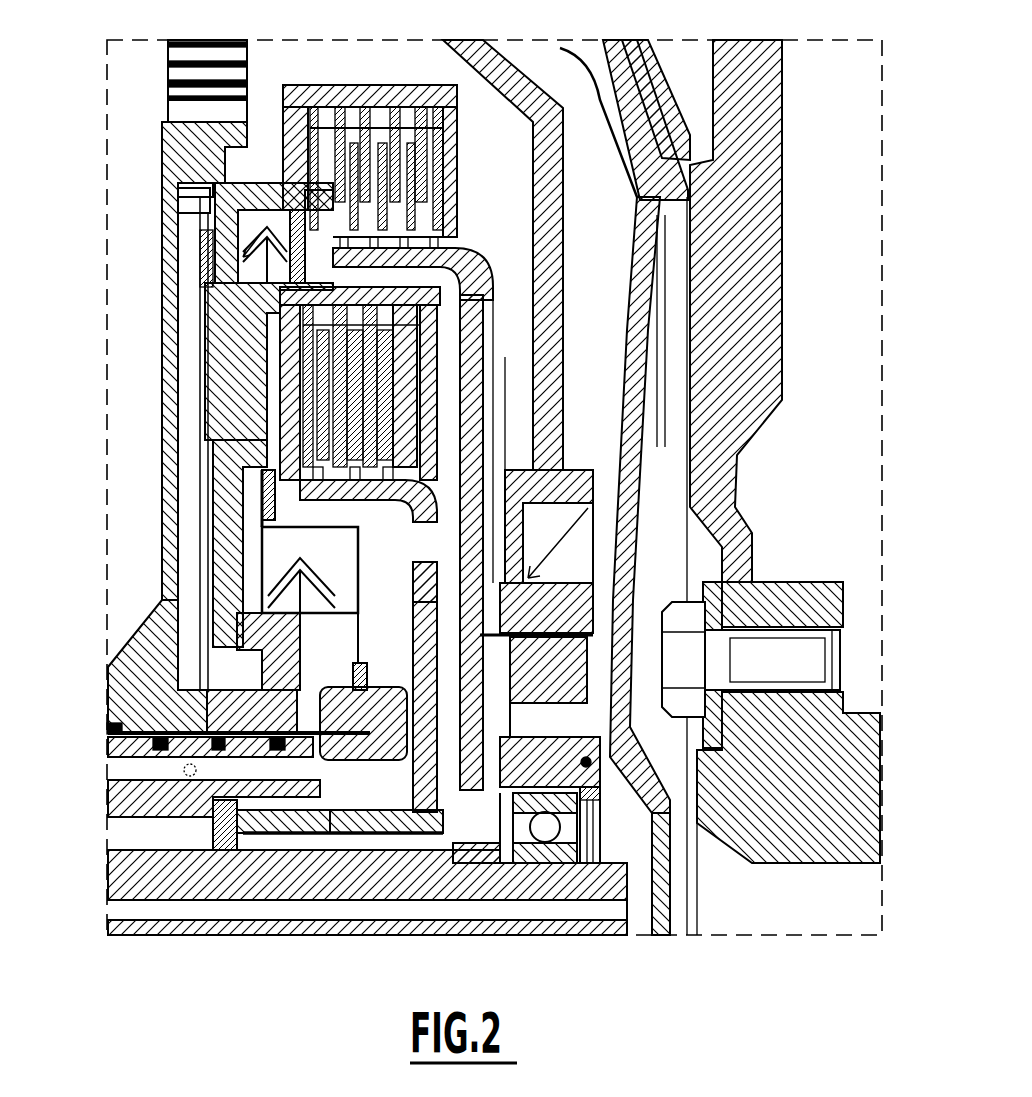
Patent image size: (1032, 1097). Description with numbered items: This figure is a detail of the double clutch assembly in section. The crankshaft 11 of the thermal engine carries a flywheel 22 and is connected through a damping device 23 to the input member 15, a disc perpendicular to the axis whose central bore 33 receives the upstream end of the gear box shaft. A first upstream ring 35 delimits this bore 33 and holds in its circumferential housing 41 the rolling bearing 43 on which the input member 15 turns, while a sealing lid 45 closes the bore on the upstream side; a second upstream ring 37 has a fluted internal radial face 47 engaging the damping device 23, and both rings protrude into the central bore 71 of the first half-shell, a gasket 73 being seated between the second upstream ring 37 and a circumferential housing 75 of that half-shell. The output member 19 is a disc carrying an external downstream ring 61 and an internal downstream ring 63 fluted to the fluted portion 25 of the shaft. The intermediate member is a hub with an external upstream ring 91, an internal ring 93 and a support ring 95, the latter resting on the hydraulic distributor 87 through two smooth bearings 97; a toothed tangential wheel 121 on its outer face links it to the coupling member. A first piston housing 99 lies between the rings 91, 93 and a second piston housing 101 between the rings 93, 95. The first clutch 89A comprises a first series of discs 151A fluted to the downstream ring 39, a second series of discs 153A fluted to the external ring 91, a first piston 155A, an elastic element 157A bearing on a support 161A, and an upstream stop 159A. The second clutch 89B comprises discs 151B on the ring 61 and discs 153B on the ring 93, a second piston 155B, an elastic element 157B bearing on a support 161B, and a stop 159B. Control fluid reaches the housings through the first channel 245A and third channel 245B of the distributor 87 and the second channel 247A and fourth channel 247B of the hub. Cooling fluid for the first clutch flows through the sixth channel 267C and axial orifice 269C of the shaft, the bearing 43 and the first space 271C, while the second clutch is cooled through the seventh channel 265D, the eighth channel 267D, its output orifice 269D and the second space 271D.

The crankshaft 11 is at (857, 814).
The input member 15 is at (495, 318).
The output member 19 is at (433, 600).
The flywheel 22 is at (763, 163).
The damping device 23 is at (640, 410).
The fluted portion 25 is at (393, 900).
The central bore 33 is at (487, 900).
The first upstream ring 35 is at (528, 763).
The second upstream ring 37 is at (532, 626).
The downstream ring 39 is at (493, 252).
The circumferential housing 41 is at (586, 762).
The rolling bearing 43 is at (517, 863).
The sealing lid 45 is at (697, 793).
The fluted internal radial face 47 is at (557, 637).
The external downstream ring 61 is at (445, 490).
The internal downstream ring 63 is at (412, 845).
The central bore 71 is at (577, 723).
The gasket 73 is at (580, 550).
The circumferential housing 75 is at (580, 487).
The hydraulic distributor 87 is at (153, 800).
The first clutch 89A is at (457, 181).
The second clutch 89B is at (260, 420).
The external upstream ring 91 is at (428, 95).
The internal ring 93 is at (495, 280).
The support ring 95 is at (372, 732).
The smooth bearings 97 is at (107, 728).
The first piston housing 99 is at (240, 247).
The second piston housing 101 is at (240, 523).
The toothed tangential wheel 121 is at (162, 163).
The first series of discs 151A is at (460, 210).
The first series of discs 151B is at (300, 375).
The second series of discs 153A is at (365, 83).
The second series of discs 153B is at (300, 340).
The first piston 155A is at (320, 83).
The second piston 155B is at (225, 566).
The elastic element 157A is at (240, 213).
The elastic element 157B is at (240, 600).
The upstream stop 159A is at (432, 170).
The stop 159B is at (400, 377).
The support 161A is at (288, 292).
The support 161B is at (262, 487).
The first channel 245A is at (184, 770).
The third channel 245B is at (213, 787).
The second channel 247A is at (190, 667).
The fourth channel 247B is at (240, 717).
The seventh axial channel 265D is at (262, 800).
The sixth internal channel 267C is at (290, 910).
The eighth internal radial channel 267D is at (387, 835).
The axial orifice 269C is at (628, 908).
The output orifice 269D is at (313, 690).
The first space 271C is at (245, 181).
The second space 271D is at (400, 547).